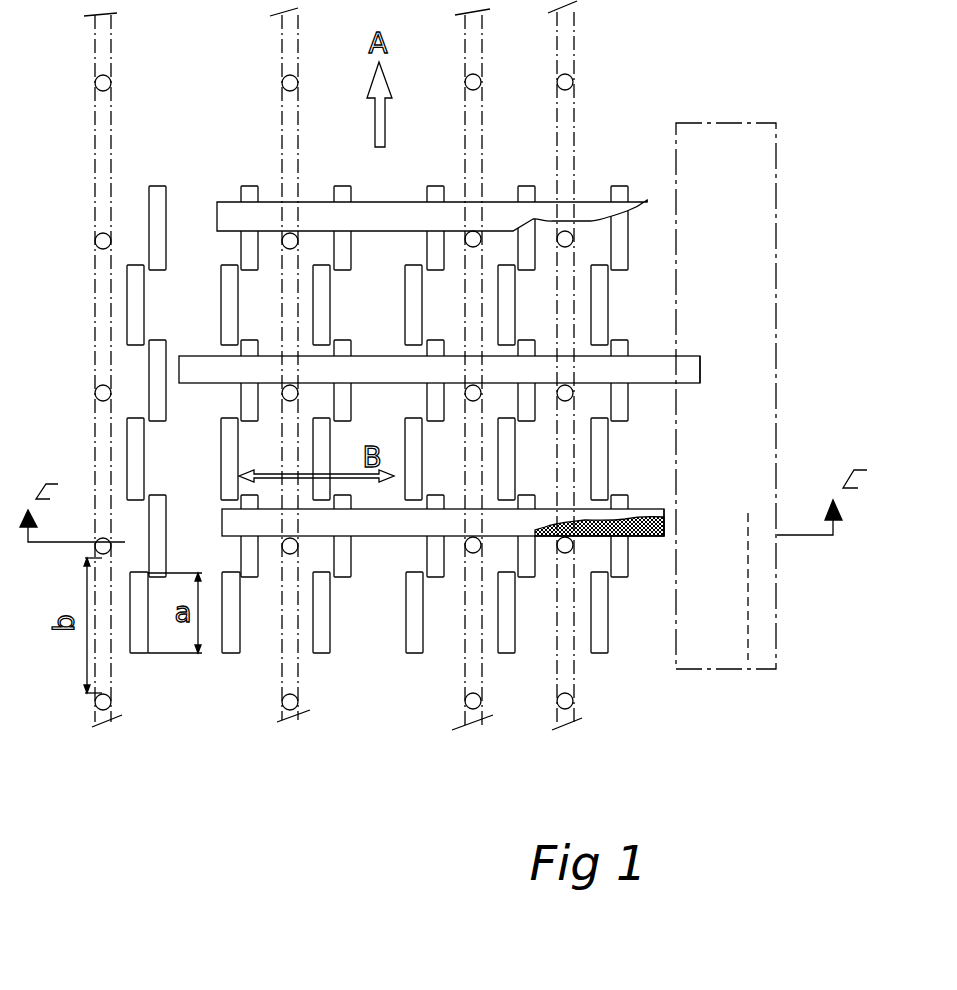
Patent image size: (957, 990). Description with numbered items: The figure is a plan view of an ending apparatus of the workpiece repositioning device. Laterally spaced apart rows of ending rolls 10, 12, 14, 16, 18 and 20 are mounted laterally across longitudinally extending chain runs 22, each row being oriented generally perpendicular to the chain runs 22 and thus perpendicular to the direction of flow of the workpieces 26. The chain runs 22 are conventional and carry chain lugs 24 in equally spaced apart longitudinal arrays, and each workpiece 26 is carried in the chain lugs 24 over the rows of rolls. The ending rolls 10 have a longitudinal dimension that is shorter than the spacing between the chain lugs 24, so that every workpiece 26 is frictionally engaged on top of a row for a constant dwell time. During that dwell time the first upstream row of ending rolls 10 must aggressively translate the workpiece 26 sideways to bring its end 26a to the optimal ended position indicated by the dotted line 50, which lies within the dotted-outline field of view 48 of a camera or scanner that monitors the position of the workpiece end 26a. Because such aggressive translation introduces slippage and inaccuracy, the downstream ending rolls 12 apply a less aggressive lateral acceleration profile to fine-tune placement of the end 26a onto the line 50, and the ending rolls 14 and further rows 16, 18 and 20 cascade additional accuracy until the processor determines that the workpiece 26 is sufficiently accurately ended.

The ending rolls 10 is at (138, 643).
The ending rolls 12 is at (163, 553).
The ending rolls 14 is at (500, 452).
The ending rolls 16 is at (617, 395).
The ending rolls 18 is at (603, 290).
The ending rolls 20 is at (613, 238).
The chain runs 22 is at (107, 673).
The chain lugs 24 is at (96, 240).
The workpiece 26 is at (387, 217).
The workpiece end 26a is at (647, 200).
The field of view 48 is at (743, 287).
The optimal ended position line 50 is at (745, 563).